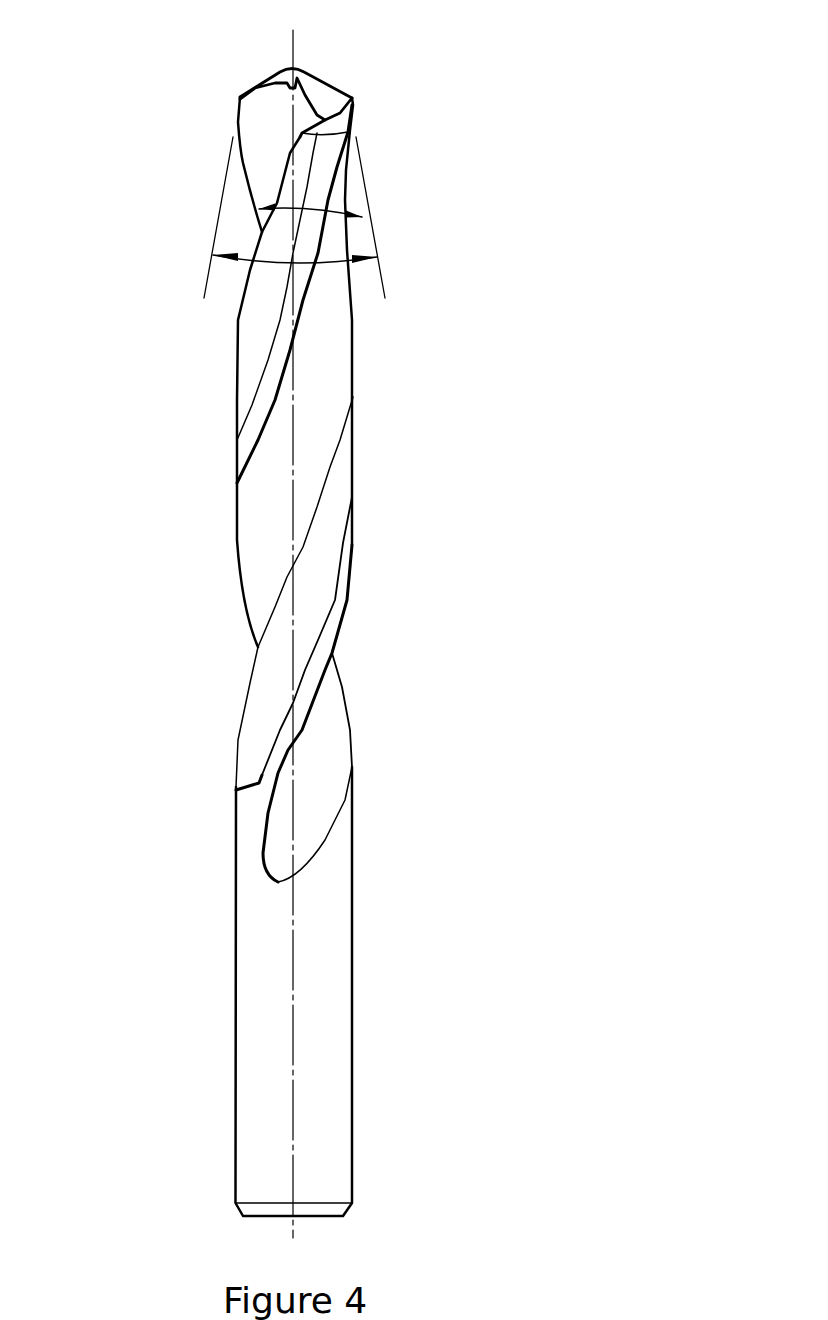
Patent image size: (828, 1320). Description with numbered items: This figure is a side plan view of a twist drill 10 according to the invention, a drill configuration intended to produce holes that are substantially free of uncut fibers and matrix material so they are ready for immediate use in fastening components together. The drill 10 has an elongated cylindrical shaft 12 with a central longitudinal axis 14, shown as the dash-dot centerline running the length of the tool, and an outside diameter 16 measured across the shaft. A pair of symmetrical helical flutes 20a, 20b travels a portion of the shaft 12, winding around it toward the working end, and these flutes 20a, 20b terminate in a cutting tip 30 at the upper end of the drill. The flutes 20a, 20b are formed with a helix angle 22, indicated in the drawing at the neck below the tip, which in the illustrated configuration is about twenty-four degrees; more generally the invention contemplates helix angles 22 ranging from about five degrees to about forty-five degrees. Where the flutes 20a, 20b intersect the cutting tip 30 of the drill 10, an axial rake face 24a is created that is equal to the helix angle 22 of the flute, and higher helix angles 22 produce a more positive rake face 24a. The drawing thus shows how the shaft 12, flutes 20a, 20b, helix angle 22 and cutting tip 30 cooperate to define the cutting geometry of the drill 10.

The twist drill 10 is at (566, 168).
The elongated cylindrical shaft 12 is at (488, 301).
The central longitudinal axis 14 is at (298, 407).
The outside diameter 16 is at (353, 482).
The helical flute 20a is at (303, 512).
The helical flute 20b is at (325, 697).
The helix angle 22 is at (313, 205).
The rake face 24a is at (300, 107).
The cutting tip 30 is at (406, 68).